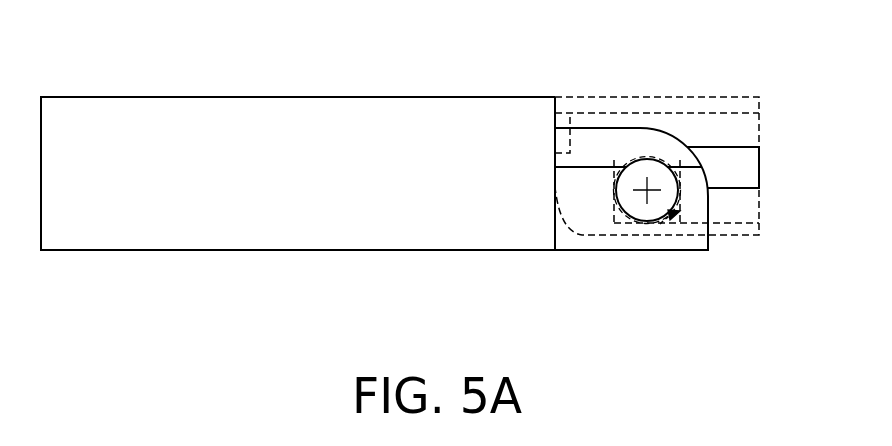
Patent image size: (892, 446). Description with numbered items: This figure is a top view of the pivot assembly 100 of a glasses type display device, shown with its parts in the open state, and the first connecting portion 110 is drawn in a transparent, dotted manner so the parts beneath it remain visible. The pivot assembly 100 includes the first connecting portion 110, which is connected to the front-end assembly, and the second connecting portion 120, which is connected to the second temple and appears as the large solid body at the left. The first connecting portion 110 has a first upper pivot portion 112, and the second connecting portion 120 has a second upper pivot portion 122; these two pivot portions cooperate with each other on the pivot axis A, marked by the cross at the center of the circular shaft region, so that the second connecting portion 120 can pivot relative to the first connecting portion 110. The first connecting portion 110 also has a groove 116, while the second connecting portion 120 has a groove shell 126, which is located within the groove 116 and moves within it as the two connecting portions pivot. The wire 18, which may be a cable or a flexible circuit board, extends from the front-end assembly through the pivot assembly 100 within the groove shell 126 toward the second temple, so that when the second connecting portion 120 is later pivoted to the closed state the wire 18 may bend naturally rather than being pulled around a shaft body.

The pivot assembly 100 is at (746, 92).
The first connecting portion 110 is at (660, 97).
The first upper pivot portion 112 is at (657, 224).
The groove 116 is at (735, 112).
The wire 18 is at (742, 168).
The second connecting portion 120 is at (302, 127).
The second upper pivot portion 122 is at (628, 203).
The groove shell 126 is at (697, 243).
The pivot axis A is at (647, 190).